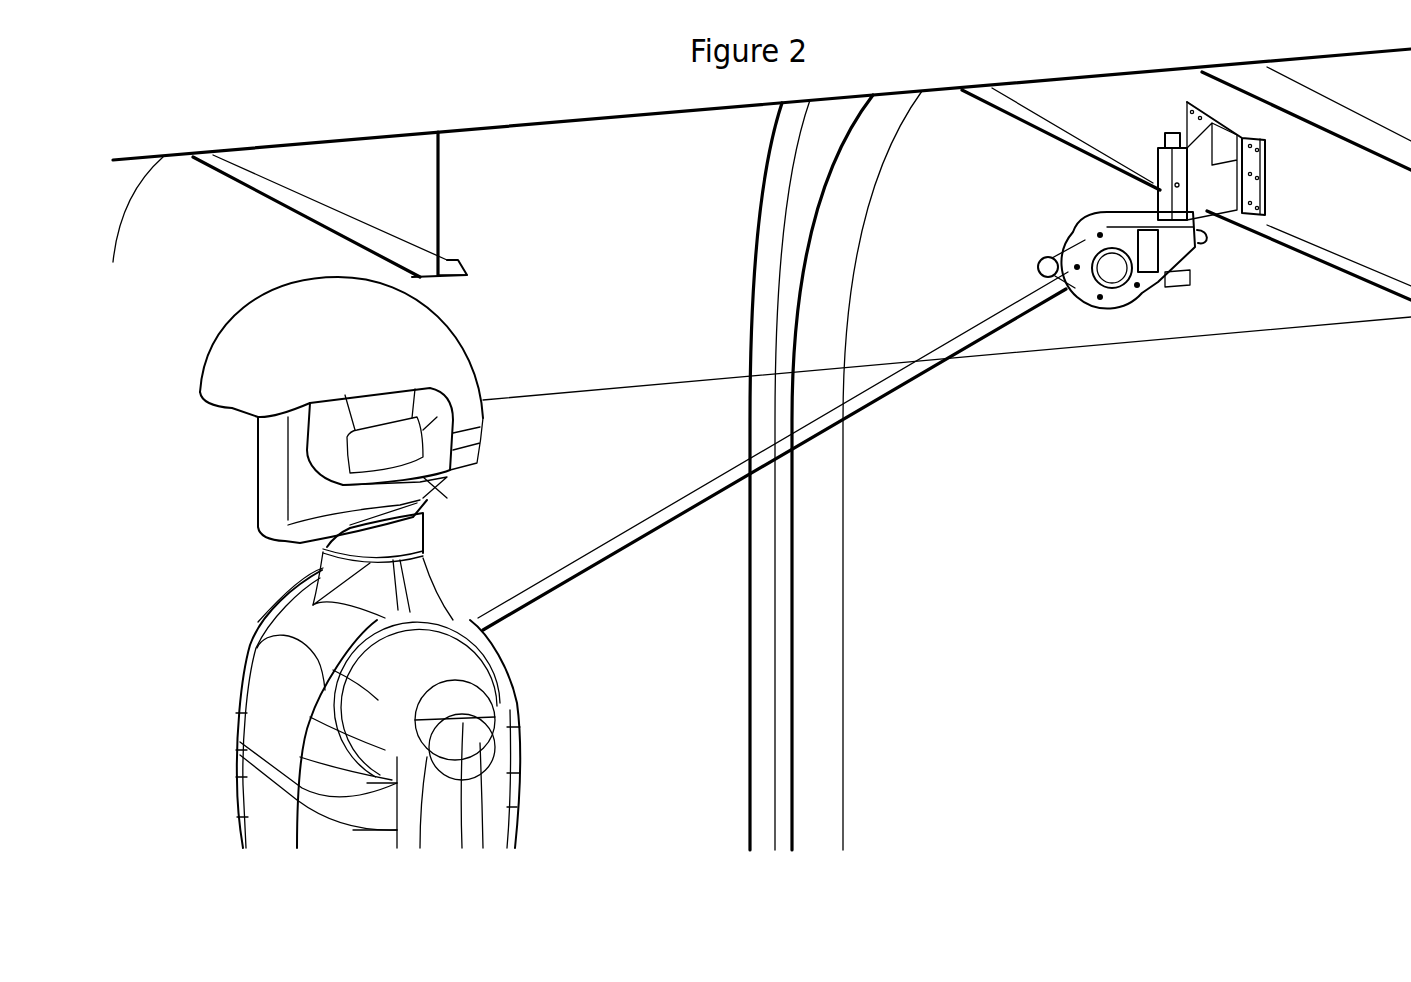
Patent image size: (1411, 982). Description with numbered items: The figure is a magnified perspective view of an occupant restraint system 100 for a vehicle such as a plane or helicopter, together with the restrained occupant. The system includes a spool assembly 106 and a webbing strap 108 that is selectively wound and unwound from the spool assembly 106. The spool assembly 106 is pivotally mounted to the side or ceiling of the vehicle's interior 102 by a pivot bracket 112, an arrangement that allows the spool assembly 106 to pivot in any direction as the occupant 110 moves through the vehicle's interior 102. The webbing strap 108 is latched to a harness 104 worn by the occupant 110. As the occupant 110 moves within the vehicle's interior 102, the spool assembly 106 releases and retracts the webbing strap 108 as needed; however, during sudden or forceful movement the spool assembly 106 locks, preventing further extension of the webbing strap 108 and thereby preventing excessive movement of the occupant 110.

The occupant restraint system 100 is at (1002, 515).
The vehicle's interior 102 is at (507, 148).
The worker 104 is at (510, 698).
The spool assembly 106 is at (1128, 300).
The webbing strap 108 is at (653, 513).
The occupant 110 is at (277, 678).
The pivot bracket 112 is at (1257, 245).